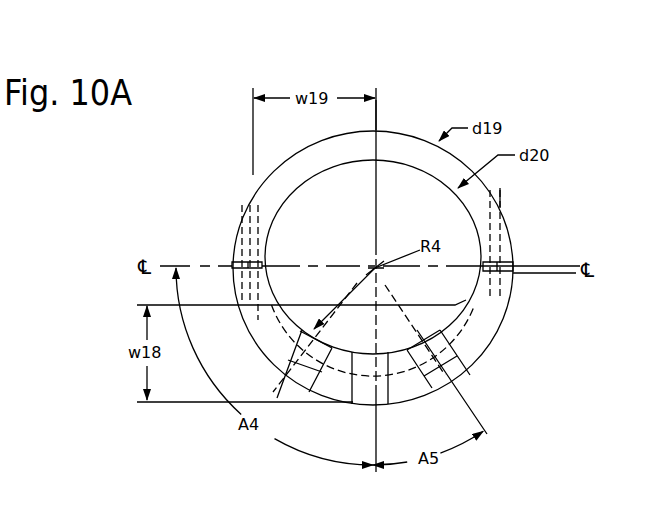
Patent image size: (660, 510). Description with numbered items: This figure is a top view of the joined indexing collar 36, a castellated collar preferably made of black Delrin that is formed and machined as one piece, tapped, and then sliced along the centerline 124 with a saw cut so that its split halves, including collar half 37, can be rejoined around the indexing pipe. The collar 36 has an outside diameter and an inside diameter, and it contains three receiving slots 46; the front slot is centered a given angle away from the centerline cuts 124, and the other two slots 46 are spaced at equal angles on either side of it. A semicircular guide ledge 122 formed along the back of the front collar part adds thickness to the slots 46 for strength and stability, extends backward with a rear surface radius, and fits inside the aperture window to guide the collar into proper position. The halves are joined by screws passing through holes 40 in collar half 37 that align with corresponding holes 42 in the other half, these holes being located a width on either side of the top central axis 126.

The indexing collar 36 is at (198, 213).
The collar half 37 is at (409, 129).
The holes 40 is at (504, 207).
The holes 42 is at (503, 338).
The receiving slots 46 is at (298, 362).
The guide ledge 122 is at (458, 327).
The centerline 124 is at (552, 297).
The top central axis 126 is at (378, 110).